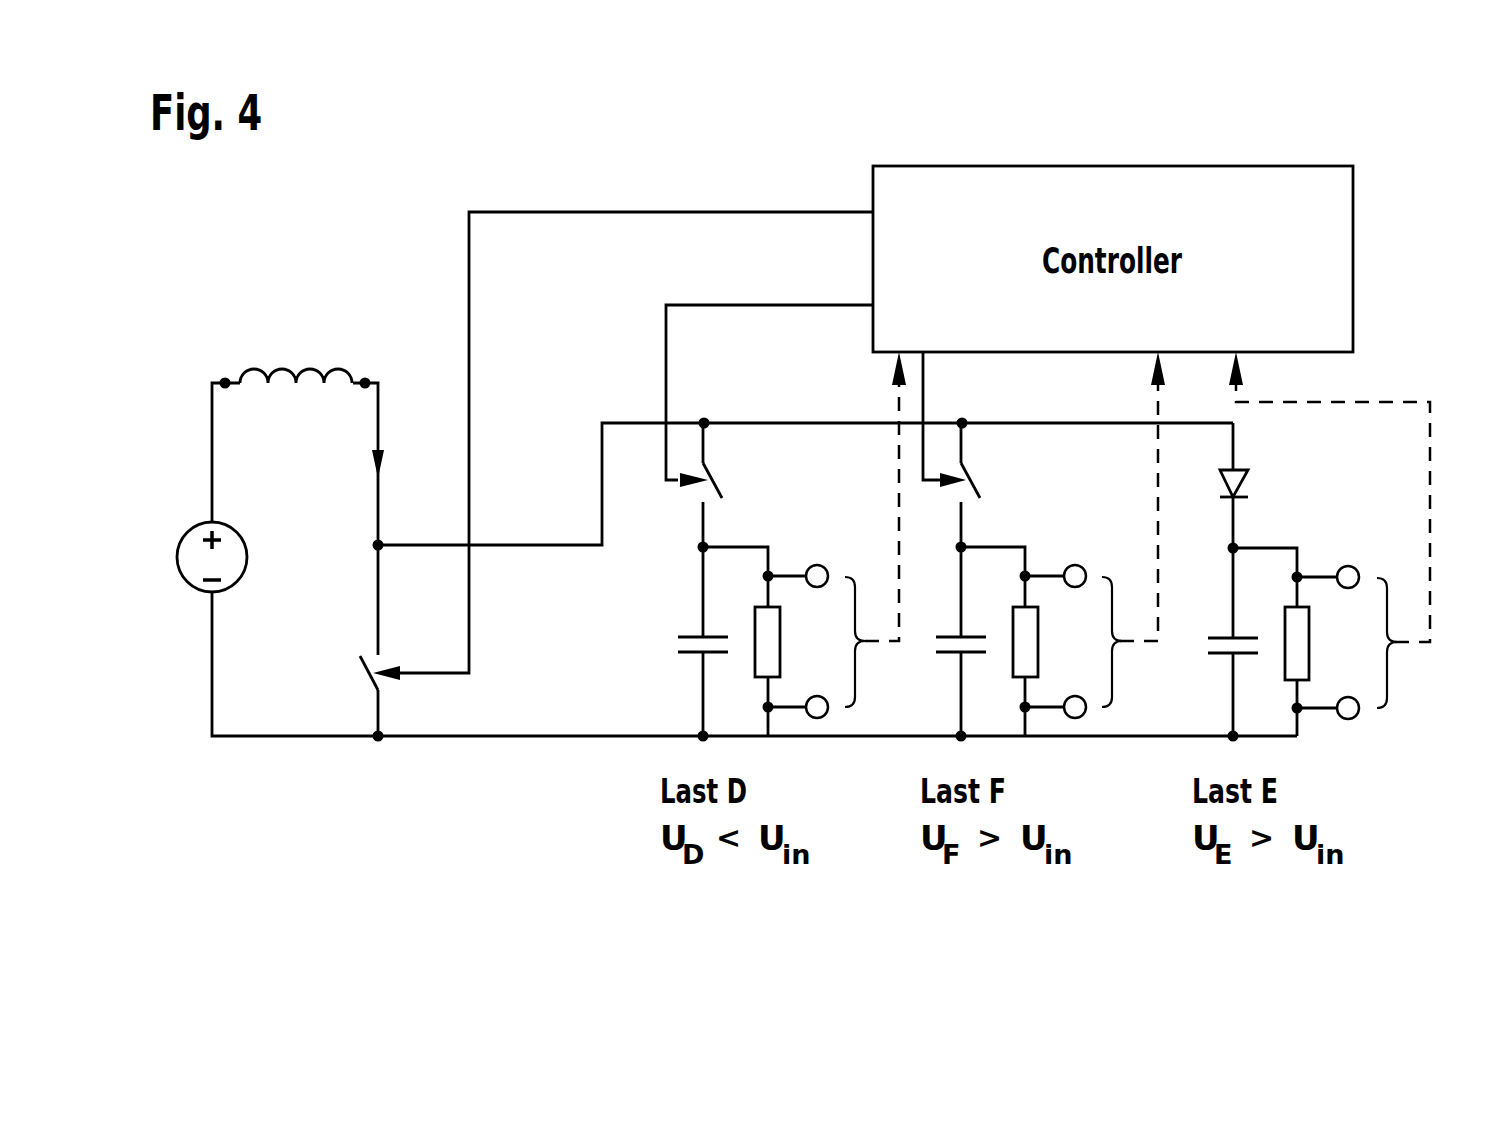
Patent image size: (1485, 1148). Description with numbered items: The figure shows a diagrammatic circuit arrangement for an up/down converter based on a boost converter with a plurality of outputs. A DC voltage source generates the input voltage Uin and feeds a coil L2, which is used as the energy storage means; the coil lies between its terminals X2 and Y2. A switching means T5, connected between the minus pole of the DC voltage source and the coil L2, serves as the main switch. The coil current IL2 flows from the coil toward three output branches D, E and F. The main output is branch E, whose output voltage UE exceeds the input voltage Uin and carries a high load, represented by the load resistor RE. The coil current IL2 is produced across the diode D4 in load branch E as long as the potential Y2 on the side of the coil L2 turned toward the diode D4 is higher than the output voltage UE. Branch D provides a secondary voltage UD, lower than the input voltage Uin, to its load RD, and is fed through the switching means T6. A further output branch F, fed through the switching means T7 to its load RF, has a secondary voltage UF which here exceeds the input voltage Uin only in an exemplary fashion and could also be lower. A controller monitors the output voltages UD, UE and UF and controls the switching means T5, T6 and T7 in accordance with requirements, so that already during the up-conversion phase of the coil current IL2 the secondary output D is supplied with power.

The inductor input terminal X2 is at (223, 355).
The potential Y2 is at (371, 355).
The coil L2 is at (296, 413).
The coil current IL2 is at (412, 476).
The input voltage Uin is at (158, 517).
The switching means T5 is at (350, 675).
The switching means T6 is at (739, 487).
The switching means T7 is at (1003, 487).
The diode D4 is at (1260, 489).
The load resistor D RD is at (793, 642).
The load resistor F RF is at (1049, 642).
The load resistor E RE is at (1321, 643).
The output voltage UD is at (883, 642).
The secondary voltage UF is at (1147, 642).
The output voltage UE is at (1425, 643).